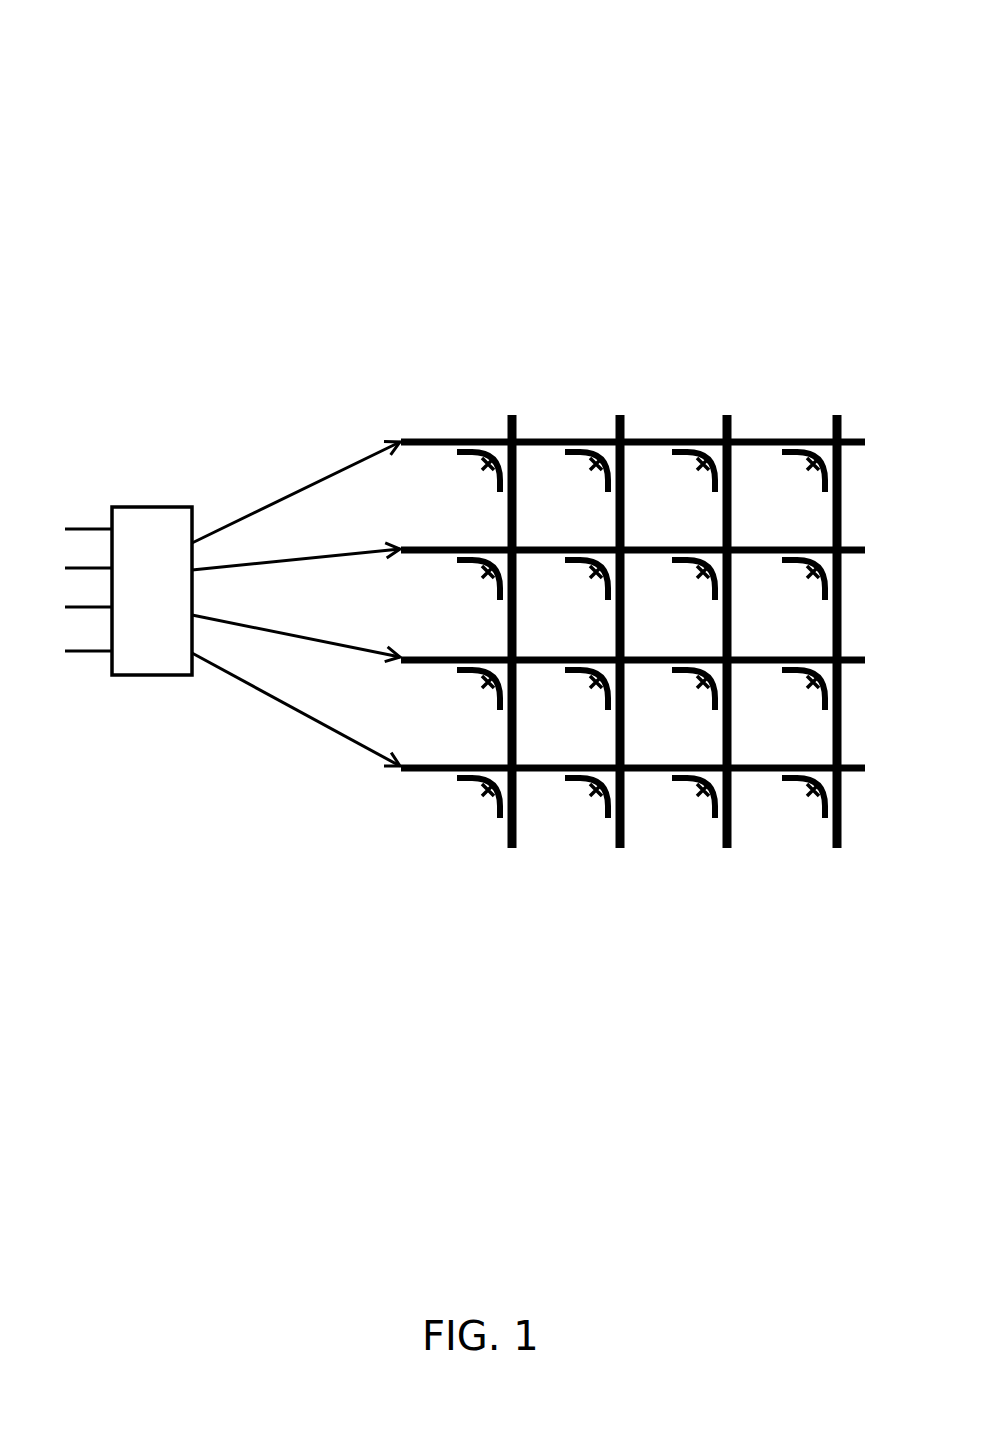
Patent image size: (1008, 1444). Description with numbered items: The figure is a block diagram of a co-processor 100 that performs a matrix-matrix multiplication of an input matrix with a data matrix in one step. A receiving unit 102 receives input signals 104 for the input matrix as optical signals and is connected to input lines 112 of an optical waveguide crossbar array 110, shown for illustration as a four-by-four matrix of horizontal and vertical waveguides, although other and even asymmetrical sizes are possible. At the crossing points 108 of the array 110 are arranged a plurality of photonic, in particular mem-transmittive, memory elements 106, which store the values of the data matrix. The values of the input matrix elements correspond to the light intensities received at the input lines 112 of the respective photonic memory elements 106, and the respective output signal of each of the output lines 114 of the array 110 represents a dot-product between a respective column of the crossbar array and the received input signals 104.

The co-processor 100 is at (208, 90).
The receiving unit 102 is at (152, 591).
The input signals 104 is at (65, 527).
The photonic memory elements 106 is at (603, 465).
The crossing points 108 is at (738, 436).
The optical waveguide crossbar array 110 is at (603, 594).
The input lines 112 is at (373, 765).
The output lines 114 is at (835, 856).